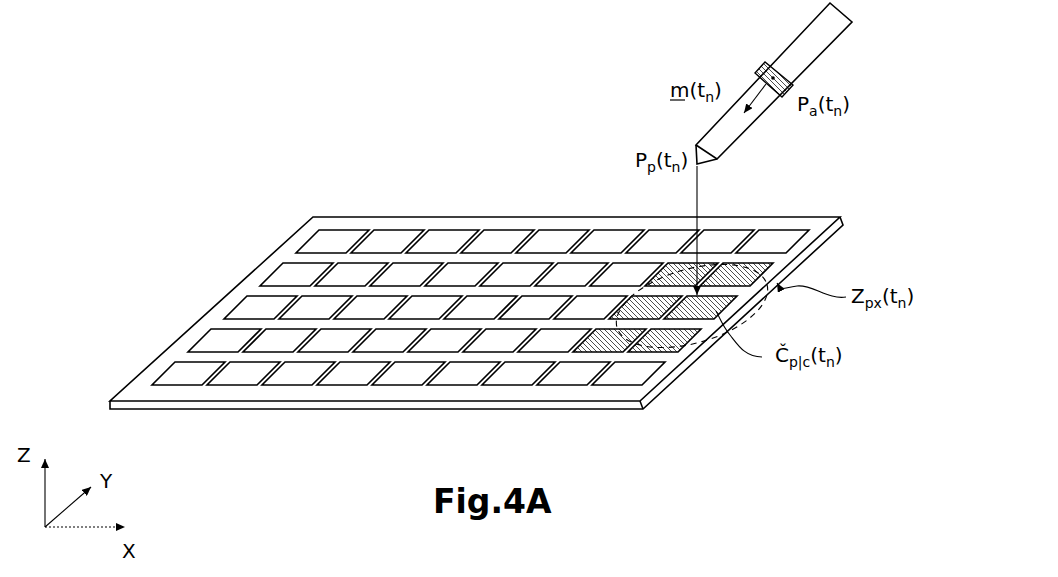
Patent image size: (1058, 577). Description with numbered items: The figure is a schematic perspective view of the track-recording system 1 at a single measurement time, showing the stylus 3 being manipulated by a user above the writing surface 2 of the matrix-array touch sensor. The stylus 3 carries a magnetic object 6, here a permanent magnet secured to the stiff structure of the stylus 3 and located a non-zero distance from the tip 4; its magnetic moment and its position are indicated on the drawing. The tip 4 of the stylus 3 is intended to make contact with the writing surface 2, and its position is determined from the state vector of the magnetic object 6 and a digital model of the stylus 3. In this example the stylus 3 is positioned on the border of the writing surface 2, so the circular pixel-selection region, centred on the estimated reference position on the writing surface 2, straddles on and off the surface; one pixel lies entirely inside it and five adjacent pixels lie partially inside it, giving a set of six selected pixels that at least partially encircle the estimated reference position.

The track-recording system 1 is at (146, 89).
The writing surface 2 is at (312, 212).
The stylus 3 is at (862, 21).
The tip 4 is at (704, 170).
The magnetic object 6 is at (758, 56).